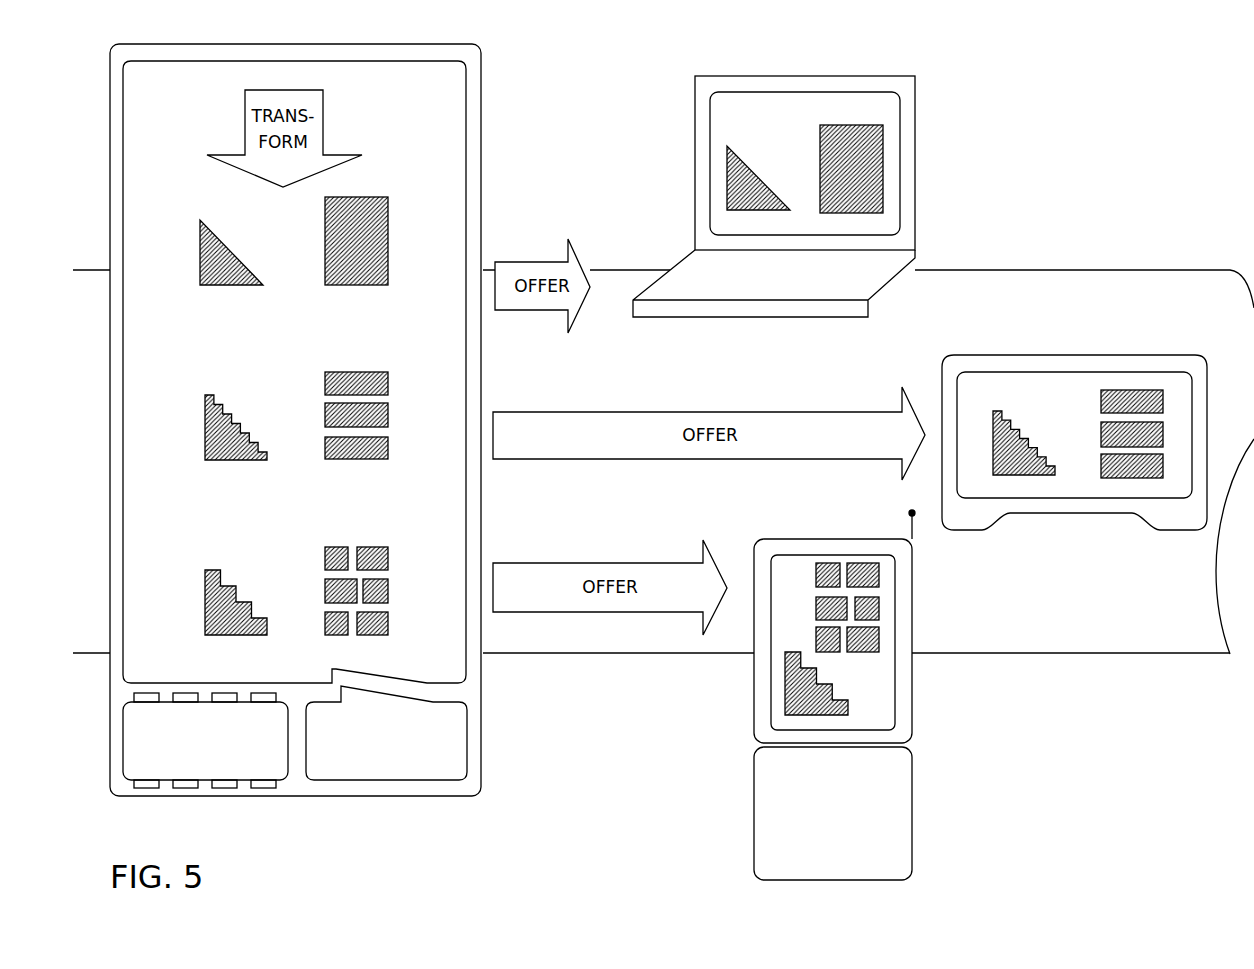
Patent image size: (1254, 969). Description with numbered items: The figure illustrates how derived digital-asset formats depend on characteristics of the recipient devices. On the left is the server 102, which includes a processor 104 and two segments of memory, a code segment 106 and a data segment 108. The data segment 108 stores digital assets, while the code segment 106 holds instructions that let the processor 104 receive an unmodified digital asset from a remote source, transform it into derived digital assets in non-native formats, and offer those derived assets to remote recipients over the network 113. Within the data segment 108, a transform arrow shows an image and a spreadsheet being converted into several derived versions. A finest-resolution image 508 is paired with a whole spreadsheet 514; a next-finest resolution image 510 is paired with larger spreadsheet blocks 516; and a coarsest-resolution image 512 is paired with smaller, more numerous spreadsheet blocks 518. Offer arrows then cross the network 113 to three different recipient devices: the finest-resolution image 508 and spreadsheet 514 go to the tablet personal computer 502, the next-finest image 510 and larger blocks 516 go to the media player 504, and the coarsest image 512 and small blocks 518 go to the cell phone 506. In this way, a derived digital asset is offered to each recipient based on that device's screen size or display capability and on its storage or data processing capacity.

The server 102 is at (483, 108).
The data segment 108 is at (467, 177).
The processor 104 is at (219, 752).
The code segment 106 is at (339, 742).
The network 113 is at (1164, 655).
The finest-resolution image 508 is at (200, 255).
The next-finest resolution image 510 is at (205, 430).
The coarsest-resolution image 512 is at (205, 603).
The spreadsheet 514 is at (388, 250).
The transformed bar content 516 is at (408, 416).
The smaller spreadsheet blocks 518 is at (405, 598).
The tablet personal computer 502 is at (915, 172).
The media player 504 is at (975, 355).
The cell phone 506 is at (912, 715).